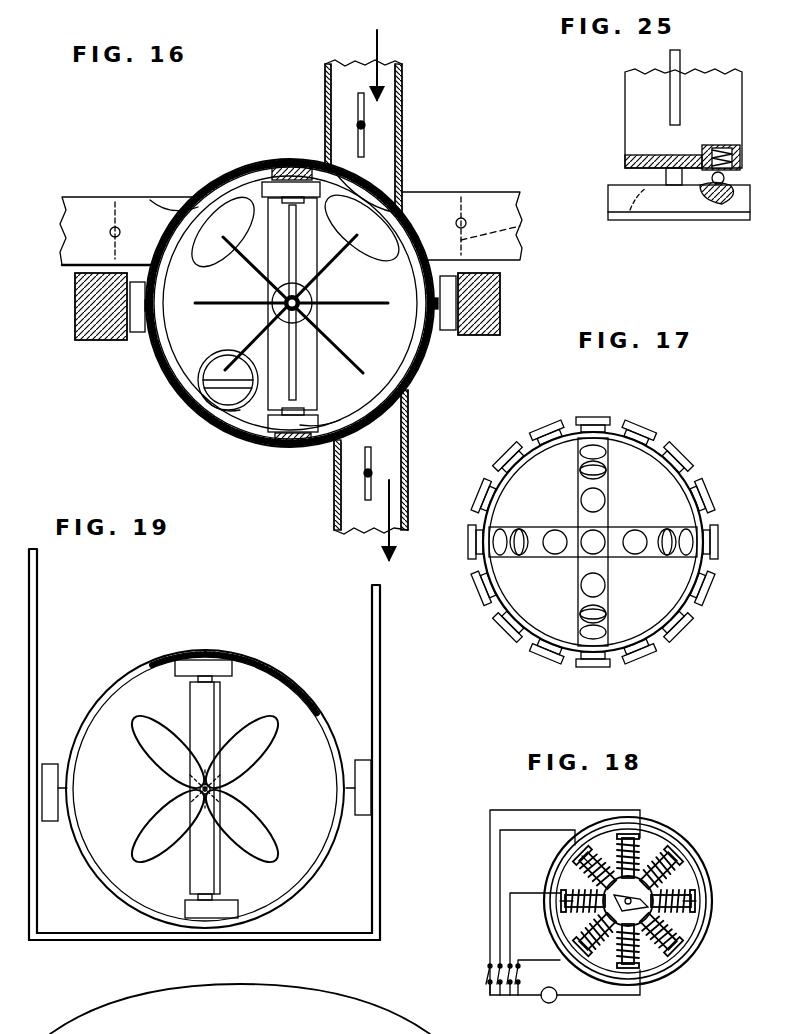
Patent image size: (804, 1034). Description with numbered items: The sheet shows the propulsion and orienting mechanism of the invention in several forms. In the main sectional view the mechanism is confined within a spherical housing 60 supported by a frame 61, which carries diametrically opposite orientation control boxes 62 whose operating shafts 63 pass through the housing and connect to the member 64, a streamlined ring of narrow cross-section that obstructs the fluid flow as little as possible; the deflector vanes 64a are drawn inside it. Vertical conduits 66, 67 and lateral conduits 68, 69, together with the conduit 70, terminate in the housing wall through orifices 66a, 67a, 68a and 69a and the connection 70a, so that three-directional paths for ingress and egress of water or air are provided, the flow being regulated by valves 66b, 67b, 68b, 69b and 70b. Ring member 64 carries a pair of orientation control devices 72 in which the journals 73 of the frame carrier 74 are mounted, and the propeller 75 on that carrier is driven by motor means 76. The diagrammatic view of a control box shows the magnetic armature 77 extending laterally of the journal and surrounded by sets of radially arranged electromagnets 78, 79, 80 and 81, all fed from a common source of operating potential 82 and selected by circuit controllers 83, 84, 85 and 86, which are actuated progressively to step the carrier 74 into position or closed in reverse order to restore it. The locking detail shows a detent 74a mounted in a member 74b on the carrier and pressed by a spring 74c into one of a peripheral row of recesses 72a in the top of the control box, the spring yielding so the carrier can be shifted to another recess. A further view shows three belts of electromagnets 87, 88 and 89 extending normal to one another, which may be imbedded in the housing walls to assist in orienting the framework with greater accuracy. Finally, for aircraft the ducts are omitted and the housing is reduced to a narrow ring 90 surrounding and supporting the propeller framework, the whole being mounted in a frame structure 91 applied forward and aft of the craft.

In FIG. 16, the spherical housing 60 is at (214, 178).
In FIG. 16, the frame 61 is at (104, 342).
In FIG. 16, the orientation control boxes 62 is at (138, 334).
In FIG. 19, the orientation control boxes 62 is at (52, 765).
In FIG. 16, the operating shafts 63 is at (155, 307).
In FIG. 16, the member 64 is at (166, 270).
In FIG. 16, the deflector vanes 64a is at (295, 230).
In FIG. 16, the conduit 66 is at (382, 125).
In FIG. 16, the orifice 66a is at (352, 195).
In FIG. 16, the valve 66b is at (368, 108).
In FIG. 16, the conduit 67 is at (400, 492).
In FIG. 16, the orifice 67a is at (372, 420).
In FIG. 16, the valve 67b is at (376, 452).
In FIG. 16, the conduit 68 is at (148, 198).
In FIG. 16, the orifice 68a is at (195, 190).
In FIG. 16, the valve 68b is at (105, 205).
In FIG. 16, the conduit 69 is at (492, 198).
In FIG. 16, the orifice 69a is at (415, 235).
In FIG. 16, the valve 69b is at (530, 232).
In FIG. 16, the conduit 70 is at (228, 400).
In FIG. 16, the connection 70a is at (226, 350).
In FIG. 16, the valve 70b is at (206, 412).
In FIG. 16, the orientation control devices 72 is at (295, 185).
In FIG. 25, the orientation control devices 72 is at (686, 212).
In FIG. 19, the orientation control devices 72 is at (188, 676).
In FIG. 18, the orientation control devices 72 is at (700, 850).
In FIG. 25, the recess 72a is at (632, 212).
In FIG. 16, the journals 73 is at (278, 190).
In FIG. 25, the journals 73 is at (665, 185).
In FIG. 19, the journals 73 is at (230, 680).
In FIG. 18, the journals 73 is at (606, 820).
In FIG. 16, the frame carrier 74 is at (306, 232).
In FIG. 25, the frame carrier 74 is at (628, 90).
In FIG. 19, the frame carrier 74 is at (217, 714).
In FIG. 25, the detent 74a is at (726, 180).
In FIG. 16, the member 74b is at (352, 420).
In FIG. 25, the spring 74c is at (703, 162).
In FIG. 16, the propeller 75 is at (312, 270).
In FIG. 25, the propeller 75 is at (672, 103).
In FIG. 19, the propeller 75 is at (258, 748).
In FIG. 16, the motor means 76 is at (302, 310).
In FIG. 19, the motor means 76 is at (222, 792).
In FIG. 18, the magnetic armature 77 is at (612, 970).
In FIG. 18, the electromagnets 78 is at (648, 866).
In FIG. 18, the electromagnets 79 is at (706, 880).
In FIG. 18, the electromagnets 80 is at (561, 900).
In FIG. 18, the electromagnets 81 is at (578, 858).
In FIG. 18, the source of operating potential 82 is at (548, 1003).
In FIG. 18, the circuit controller 83 is at (484, 975).
In FIG. 18, the circuit controller 84 is at (498, 968).
In FIG. 18, the circuit controller 85 is at (508, 968).
In FIG. 18, the circuit controller 86 is at (516, 968).
In FIG. 17, the belt of electromagnets 87 is at (660, 438).
In FIG. 17, the belt of electromagnets 88 is at (600, 500).
In FIG. 17, the belt of electromagnets 89 is at (632, 550).
In FIG. 19, the narrow ring 90 is at (76, 772).
In FIG. 19, the frame structure 91 is at (38, 666).